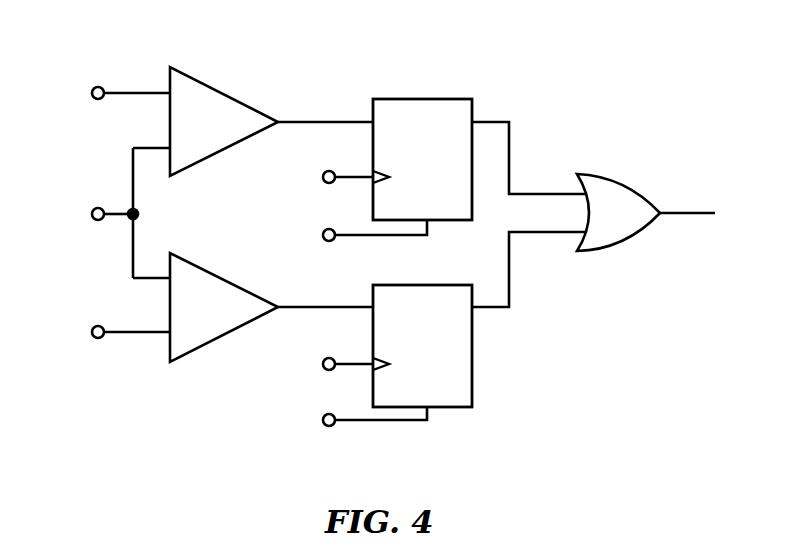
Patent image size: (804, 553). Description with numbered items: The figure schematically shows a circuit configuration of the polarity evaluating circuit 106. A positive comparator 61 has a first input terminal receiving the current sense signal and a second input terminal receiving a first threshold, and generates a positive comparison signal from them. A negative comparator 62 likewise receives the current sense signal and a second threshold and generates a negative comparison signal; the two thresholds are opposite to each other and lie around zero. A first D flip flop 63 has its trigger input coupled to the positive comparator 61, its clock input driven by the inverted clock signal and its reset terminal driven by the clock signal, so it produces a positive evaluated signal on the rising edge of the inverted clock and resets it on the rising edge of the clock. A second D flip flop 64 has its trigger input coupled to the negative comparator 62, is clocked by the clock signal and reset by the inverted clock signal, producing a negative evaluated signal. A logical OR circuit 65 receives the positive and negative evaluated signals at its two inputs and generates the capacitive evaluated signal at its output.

The positive comparator 61 is at (224, 121).
The negative comparator 62 is at (224, 307).
The first D flip flop 63 is at (425, 96).
The second D flip flop 64 is at (480, 365).
The logical OR circuit 65 is at (618, 212).
The polarity evaluating circuit 106 is at (642, 112).